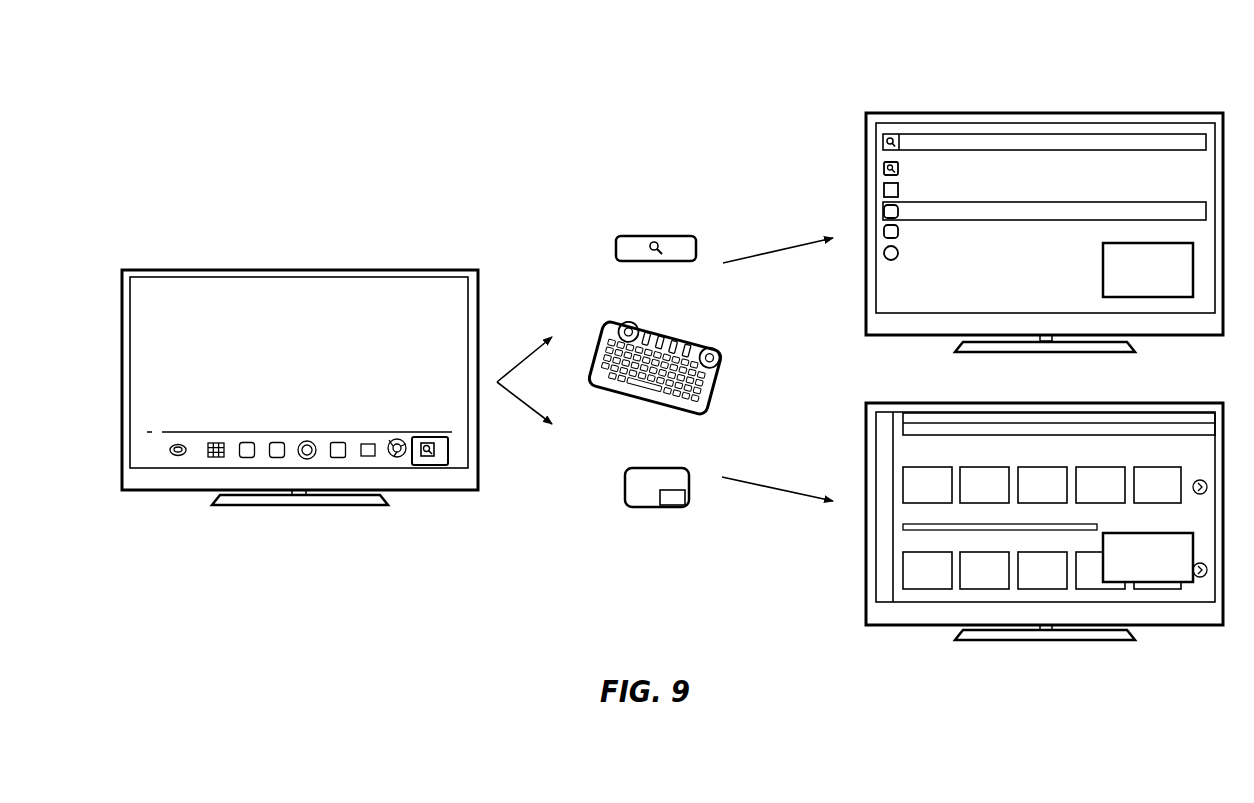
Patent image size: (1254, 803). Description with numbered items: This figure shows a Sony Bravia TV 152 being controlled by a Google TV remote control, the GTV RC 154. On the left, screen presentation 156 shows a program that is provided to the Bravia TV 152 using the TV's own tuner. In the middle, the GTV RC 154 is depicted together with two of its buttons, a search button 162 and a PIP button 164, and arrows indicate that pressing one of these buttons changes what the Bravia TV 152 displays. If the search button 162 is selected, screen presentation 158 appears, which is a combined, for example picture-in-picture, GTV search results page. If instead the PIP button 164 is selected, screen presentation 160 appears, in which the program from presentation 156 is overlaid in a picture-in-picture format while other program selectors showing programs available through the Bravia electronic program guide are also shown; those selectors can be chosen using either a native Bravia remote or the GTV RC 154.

The Bravia TV 152 is at (1090, 72).
The GTV RC 154 is at (690, 336).
The screen presentation 156 is at (365, 270).
The screen presentation 158 is at (1111, 113).
The screen presentation 160 is at (1111, 403).
The search button 162 is at (667, 235).
The PIP button 164 is at (690, 500).